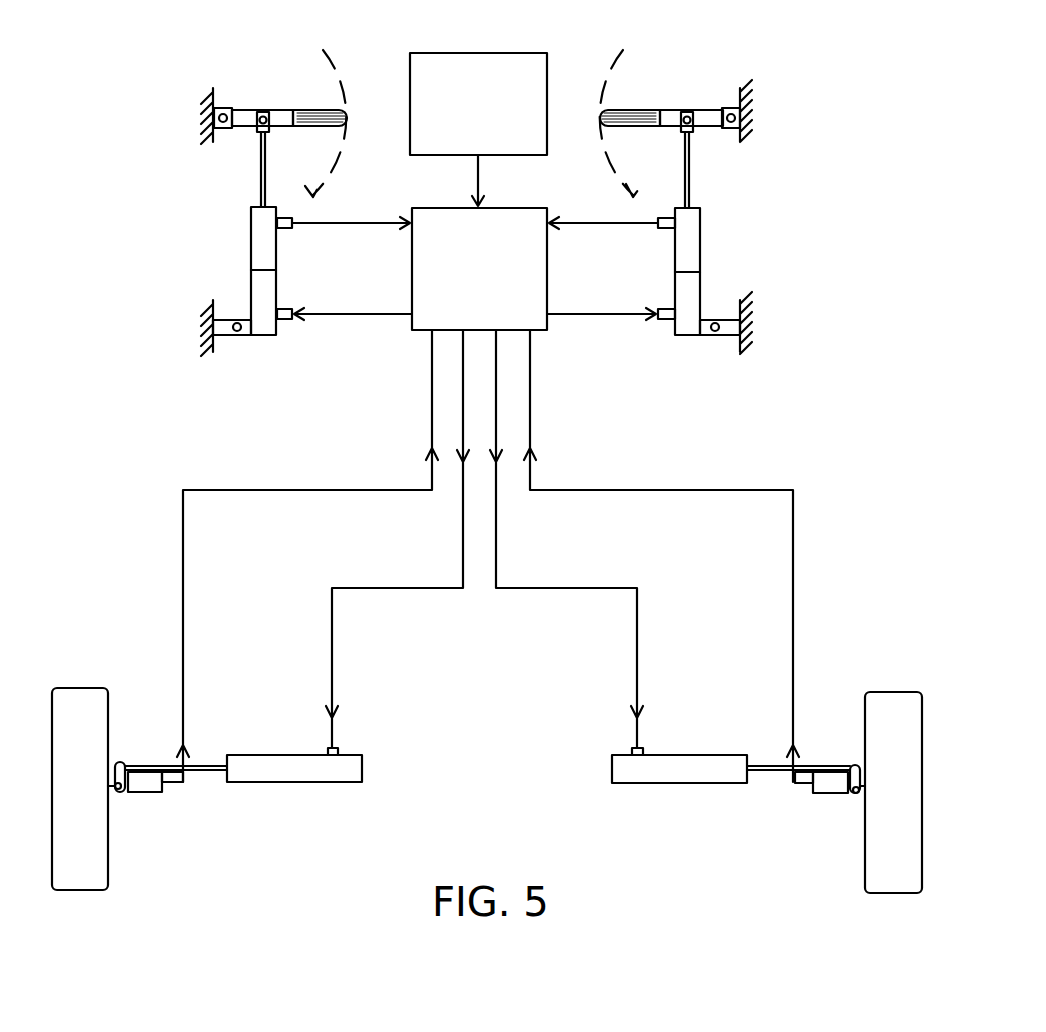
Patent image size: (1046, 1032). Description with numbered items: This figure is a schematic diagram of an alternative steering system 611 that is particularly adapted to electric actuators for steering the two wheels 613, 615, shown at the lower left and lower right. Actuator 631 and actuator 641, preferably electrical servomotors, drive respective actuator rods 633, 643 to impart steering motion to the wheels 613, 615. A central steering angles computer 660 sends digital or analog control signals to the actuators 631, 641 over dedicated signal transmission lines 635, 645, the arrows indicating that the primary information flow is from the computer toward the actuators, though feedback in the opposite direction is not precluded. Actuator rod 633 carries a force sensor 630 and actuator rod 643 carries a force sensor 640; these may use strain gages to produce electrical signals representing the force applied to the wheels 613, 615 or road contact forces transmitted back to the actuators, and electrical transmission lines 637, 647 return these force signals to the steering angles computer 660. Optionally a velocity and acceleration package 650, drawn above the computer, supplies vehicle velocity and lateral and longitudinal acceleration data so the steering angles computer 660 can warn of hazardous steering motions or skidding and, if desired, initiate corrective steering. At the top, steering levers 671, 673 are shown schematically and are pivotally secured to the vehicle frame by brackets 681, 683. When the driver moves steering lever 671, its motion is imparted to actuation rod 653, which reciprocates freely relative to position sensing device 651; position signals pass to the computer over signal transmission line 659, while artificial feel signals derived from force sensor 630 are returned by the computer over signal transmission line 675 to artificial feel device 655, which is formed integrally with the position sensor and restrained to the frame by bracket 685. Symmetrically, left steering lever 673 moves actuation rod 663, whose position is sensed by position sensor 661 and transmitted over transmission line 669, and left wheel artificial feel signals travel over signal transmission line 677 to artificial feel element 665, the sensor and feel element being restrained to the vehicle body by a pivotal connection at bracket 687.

The steering system 611 is at (500, 716).
The left wheel 613 is at (108, 852).
The right wheel 615 is at (865, 852).
The force sensor 630 is at (140, 792).
The actuator 631 is at (272, 782).
The actuator rod 633 is at (194, 764).
The signal transmission line 635 is at (382, 590).
The electrical transmission line 637 is at (183, 550).
The force sensor 640 is at (836, 793).
The actuator 641 is at (658, 784).
The actuator rod 643 is at (778, 716).
The signal transmission line 645 is at (614, 590).
The electrical transmission line 647 is at (793, 518).
The velocity and acceleration package 650 is at (510, 53).
The position sensing device 651 is at (251, 240).
The actuation rod 653 is at (260, 178).
The artificial feel device 655 is at (251, 284).
The signal transmission line 659 is at (334, 223).
The steering angles computer 660 is at (514, 208).
The position sensor 661 is at (700, 243).
The actuation rod 663 is at (690, 176).
The artificial feel element 665 is at (700, 292).
The transmission line 669 is at (640, 223).
The steering lever 671 is at (328, 126).
The left steering lever 673 is at (626, 126).
The signal transmission line 675 is at (332, 314).
The signal transmission line 677 is at (620, 314).
The bracket 681 is at (222, 142).
The bracket 683 is at (740, 142).
The bracket 685 is at (230, 340).
The bracket 687 is at (716, 340).